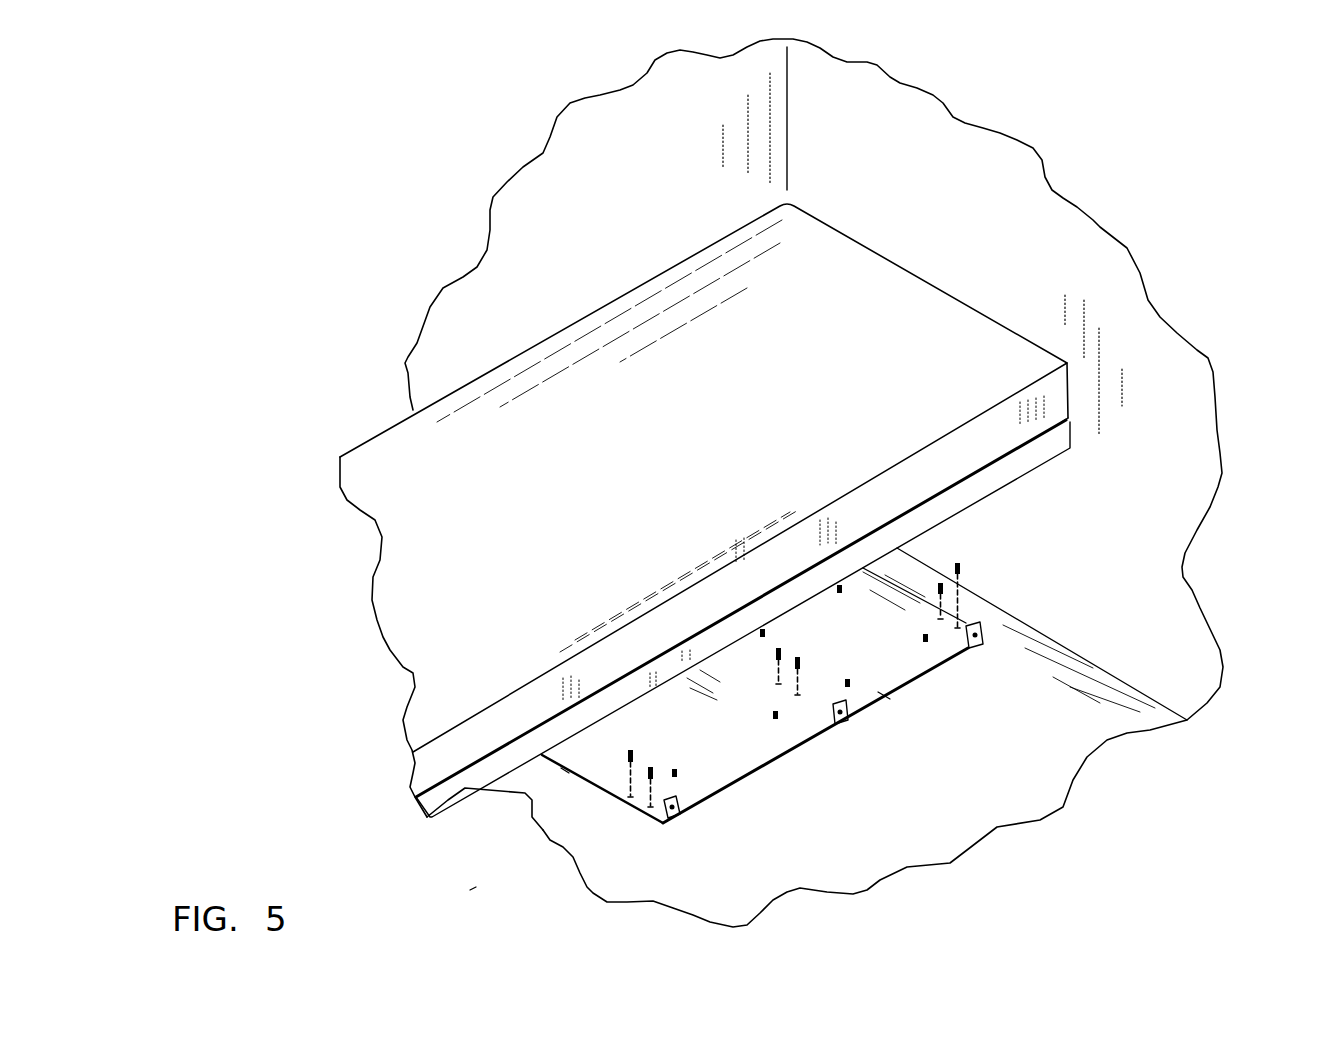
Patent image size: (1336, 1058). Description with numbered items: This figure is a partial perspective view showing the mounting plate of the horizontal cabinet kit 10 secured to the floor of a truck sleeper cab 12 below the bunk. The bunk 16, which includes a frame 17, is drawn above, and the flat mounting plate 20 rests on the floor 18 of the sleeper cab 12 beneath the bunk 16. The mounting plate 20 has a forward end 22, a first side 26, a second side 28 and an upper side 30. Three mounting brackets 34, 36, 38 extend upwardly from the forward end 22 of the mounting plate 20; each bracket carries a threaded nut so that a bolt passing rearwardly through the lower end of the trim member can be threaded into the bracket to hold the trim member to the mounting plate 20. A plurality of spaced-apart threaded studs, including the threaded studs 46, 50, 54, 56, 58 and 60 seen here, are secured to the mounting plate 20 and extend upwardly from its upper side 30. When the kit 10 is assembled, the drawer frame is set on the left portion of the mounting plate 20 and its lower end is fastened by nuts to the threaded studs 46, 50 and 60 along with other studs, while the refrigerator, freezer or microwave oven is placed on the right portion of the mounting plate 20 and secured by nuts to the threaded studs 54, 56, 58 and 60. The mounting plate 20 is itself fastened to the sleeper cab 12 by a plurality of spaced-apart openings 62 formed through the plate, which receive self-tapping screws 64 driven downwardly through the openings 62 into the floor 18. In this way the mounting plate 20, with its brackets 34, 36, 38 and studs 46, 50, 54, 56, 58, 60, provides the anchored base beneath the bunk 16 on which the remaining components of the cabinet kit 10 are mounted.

The horizontal cabinet kit 10 is at (468, 891).
The sleeper cab 12 is at (505, 202).
The bunk 16 is at (460, 502).
The frame 17 is at (465, 787).
The floor 18 is at (915, 808).
The mounting plate 20 is at (766, 776).
The forward end 22 is at (883, 695).
The first side 26 is at (530, 810).
The second side 28 is at (900, 592).
The upper side 30 is at (740, 672).
The mounting bracket 34 is at (662, 823).
The mounting bracket 36 is at (846, 722).
The mounting bracket 38 is at (982, 626).
The threaded stud 46 is at (674, 768).
The threaded stud 50 is at (780, 717).
The threaded stud 54 is at (847, 680).
The threaded stud 56 is at (763, 631).
The threaded stud 58 is at (928, 638).
The threaded stud 60 is at (839, 586).
The openings 62 is at (942, 582).
The screws 64 is at (650, 767).